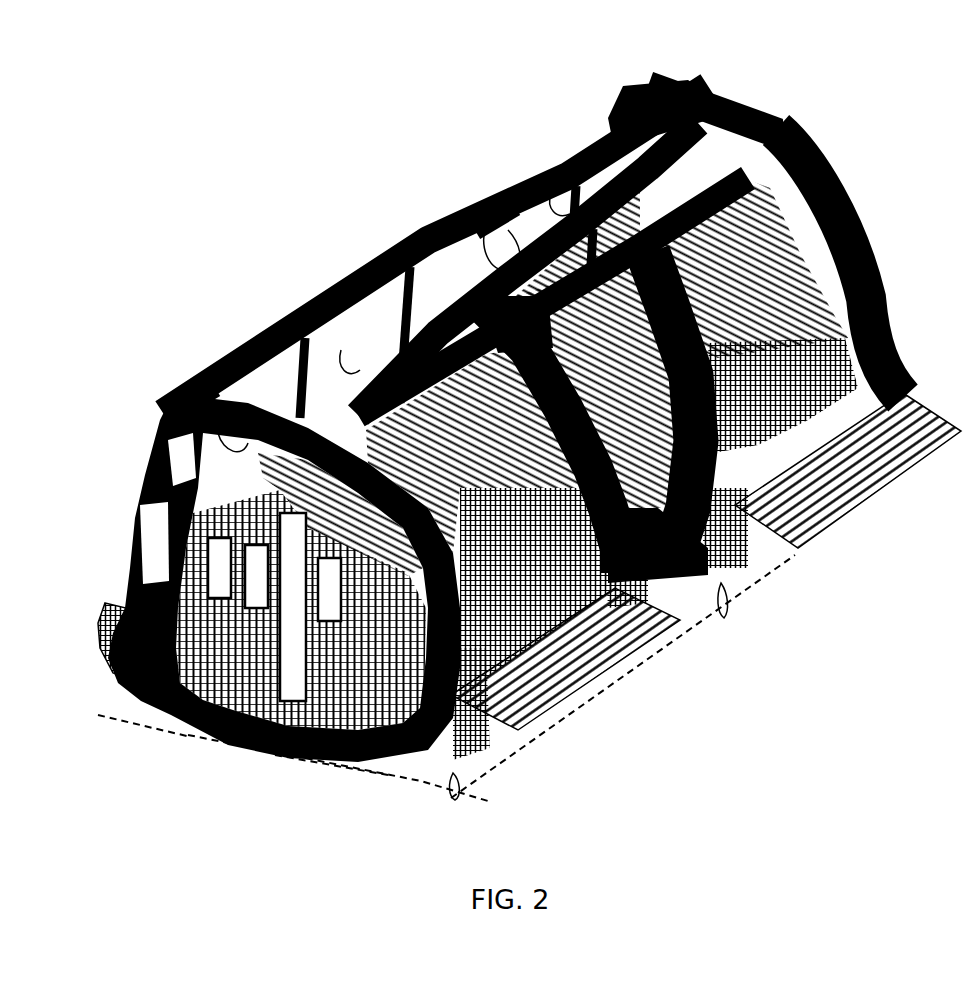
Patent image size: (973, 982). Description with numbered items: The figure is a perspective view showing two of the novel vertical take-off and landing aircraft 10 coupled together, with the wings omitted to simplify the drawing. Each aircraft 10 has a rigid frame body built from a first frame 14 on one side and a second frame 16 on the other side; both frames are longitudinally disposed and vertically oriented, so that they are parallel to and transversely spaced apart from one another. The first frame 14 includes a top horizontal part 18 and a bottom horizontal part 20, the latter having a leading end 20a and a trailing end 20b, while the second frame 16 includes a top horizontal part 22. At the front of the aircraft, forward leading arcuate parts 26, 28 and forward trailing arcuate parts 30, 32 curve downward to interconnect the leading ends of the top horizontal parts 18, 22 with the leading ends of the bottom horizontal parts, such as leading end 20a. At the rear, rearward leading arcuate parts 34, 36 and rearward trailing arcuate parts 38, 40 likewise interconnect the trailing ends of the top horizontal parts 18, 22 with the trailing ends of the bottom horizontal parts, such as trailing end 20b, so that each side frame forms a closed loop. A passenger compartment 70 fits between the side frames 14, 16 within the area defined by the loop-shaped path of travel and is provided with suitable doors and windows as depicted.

The vertical take-off and landing aircraft 10 is at (524, 445).
The first frame 14 is at (275, 464).
The second frame 16 is at (620, 70).
The top horizontal part 18 is at (195, 392).
The bottom horizontal part 20 is at (267, 747).
The leading end 20a is at (183, 733).
The trailing end 20b is at (353, 757).
The top horizontal part 22 is at (430, 238).
The forward leading arcuate part 26 is at (152, 433).
The forward leading arcuate part 28 is at (285, 385).
The forward trailing arcuate part 30 is at (210, 478).
The forward trailing arcuate part 32 is at (690, 72).
The rearward leading arcuate part 34 is at (393, 762).
The rearward leading arcuate part 36 is at (805, 210).
The rearward trailing arcuate part 38 is at (510, 633).
The rearward trailing arcuate part 40 is at (870, 240).
The passenger compartment 70 is at (283, 733).